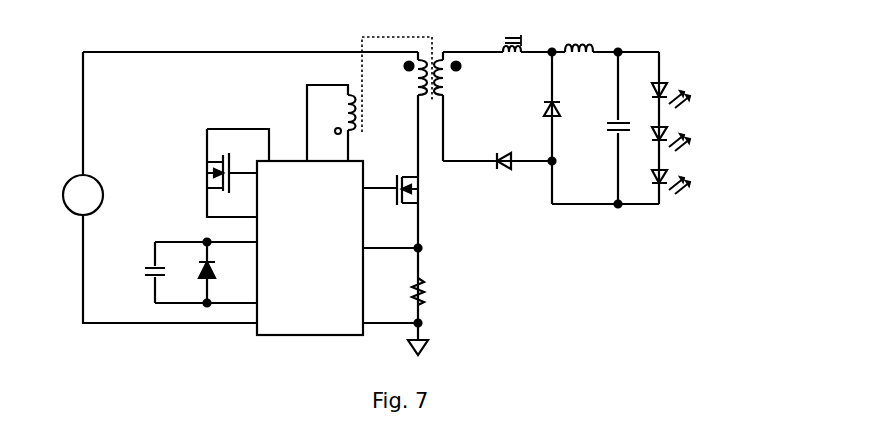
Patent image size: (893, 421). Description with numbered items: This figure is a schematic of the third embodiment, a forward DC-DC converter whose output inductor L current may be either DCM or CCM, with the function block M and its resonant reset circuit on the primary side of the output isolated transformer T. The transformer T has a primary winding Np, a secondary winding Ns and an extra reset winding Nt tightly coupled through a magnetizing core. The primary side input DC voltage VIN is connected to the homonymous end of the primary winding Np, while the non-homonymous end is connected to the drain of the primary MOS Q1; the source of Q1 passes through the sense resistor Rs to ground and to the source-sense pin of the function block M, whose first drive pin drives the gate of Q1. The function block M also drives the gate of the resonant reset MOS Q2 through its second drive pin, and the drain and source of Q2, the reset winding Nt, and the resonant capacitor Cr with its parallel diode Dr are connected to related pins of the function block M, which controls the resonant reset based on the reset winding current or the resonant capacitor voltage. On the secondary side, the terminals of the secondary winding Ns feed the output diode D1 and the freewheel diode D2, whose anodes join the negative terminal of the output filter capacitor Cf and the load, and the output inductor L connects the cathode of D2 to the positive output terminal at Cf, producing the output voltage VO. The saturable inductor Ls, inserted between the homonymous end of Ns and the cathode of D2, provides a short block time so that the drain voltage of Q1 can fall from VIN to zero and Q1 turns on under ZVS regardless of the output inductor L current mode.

The primary side input DC voltage VIN is at (86, 183).
The function block M is at (310, 248).
The resonant capacitor Cr is at (162, 272).
The parallel diode Dr is at (216, 273).
The resonant reset MOS Q2 is at (226, 173).
The reset winding Nt is at (331, 123).
The output isolated transformer T is at (398, 84).
The primary winding Np is at (408, 114).
The secondary winding Ns is at (468, 106).
The primary MOS Q1 is at (403, 249).
The sense resistor Rs is at (409, 296).
The saturable inductor Ls is at (523, 42).
The output inductor L is at (612, 40).
The freewheel diode D2 is at (563, 128).
The output diode D1 is at (497, 153).
The output filter capacitor Cf is at (609, 128).
The output voltage / LED load VO is at (689, 128).